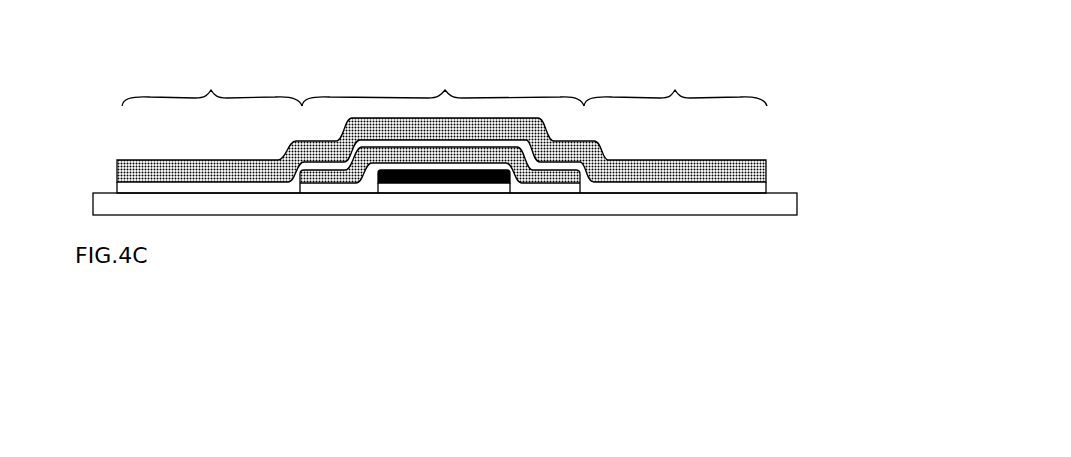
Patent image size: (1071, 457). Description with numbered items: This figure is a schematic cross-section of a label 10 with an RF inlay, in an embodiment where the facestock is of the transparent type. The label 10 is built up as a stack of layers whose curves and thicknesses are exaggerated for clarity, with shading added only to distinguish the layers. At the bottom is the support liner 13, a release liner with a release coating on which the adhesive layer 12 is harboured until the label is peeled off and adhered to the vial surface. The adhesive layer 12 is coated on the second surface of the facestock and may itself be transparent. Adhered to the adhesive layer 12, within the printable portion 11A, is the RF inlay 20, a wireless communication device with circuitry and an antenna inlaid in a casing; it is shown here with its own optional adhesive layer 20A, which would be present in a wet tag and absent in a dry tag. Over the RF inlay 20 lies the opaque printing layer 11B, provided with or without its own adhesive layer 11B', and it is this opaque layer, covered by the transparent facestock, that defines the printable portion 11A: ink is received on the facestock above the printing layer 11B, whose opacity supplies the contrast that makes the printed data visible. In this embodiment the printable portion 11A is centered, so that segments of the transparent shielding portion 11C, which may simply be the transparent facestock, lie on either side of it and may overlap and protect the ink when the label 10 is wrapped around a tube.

The label 10 is at (816, 109).
The printable portion 11A is at (443, 86).
The printing layer 11B is at (441, 113).
The adhesive layer of the printing layer 11B' is at (440, 216).
The transparent shielding portion 11C is at (444, 85).
The adhesive layer 12 is at (130, 186).
The support liner 13 is at (702, 207).
The RF inlay 20 is at (511, 184).
The adhesive layer of the RF inlay 20A is at (443, 188).